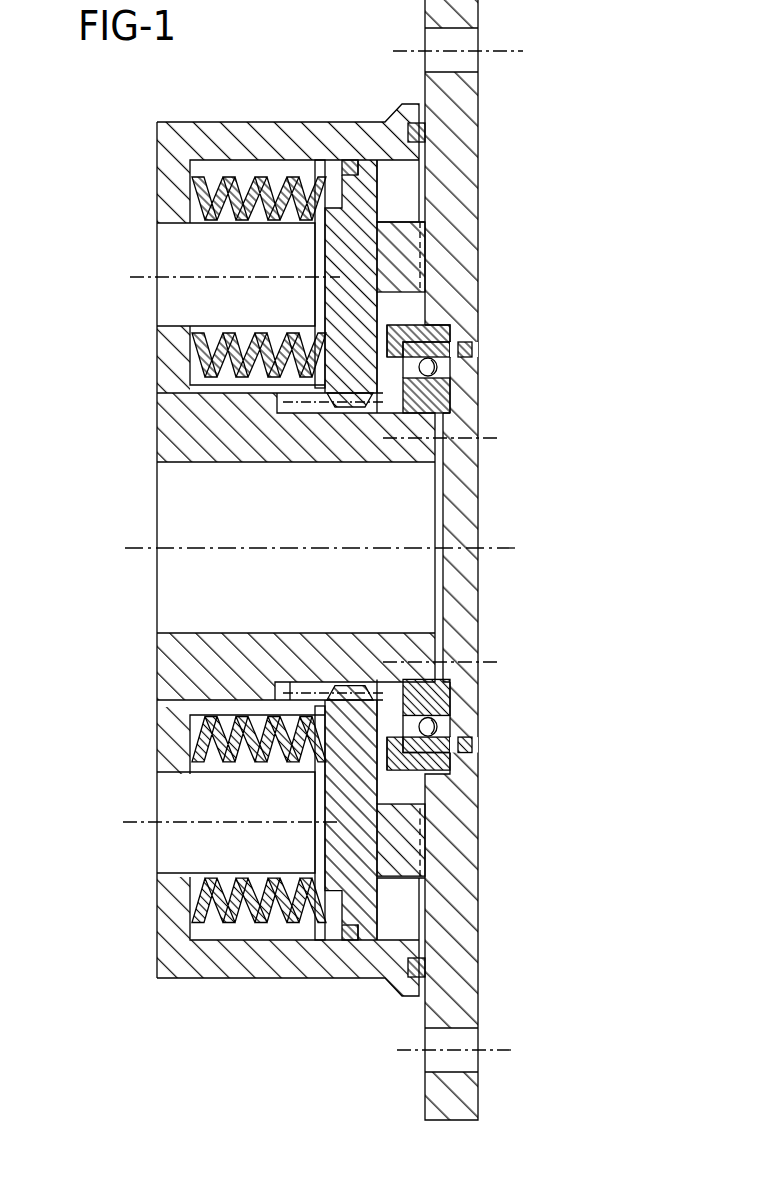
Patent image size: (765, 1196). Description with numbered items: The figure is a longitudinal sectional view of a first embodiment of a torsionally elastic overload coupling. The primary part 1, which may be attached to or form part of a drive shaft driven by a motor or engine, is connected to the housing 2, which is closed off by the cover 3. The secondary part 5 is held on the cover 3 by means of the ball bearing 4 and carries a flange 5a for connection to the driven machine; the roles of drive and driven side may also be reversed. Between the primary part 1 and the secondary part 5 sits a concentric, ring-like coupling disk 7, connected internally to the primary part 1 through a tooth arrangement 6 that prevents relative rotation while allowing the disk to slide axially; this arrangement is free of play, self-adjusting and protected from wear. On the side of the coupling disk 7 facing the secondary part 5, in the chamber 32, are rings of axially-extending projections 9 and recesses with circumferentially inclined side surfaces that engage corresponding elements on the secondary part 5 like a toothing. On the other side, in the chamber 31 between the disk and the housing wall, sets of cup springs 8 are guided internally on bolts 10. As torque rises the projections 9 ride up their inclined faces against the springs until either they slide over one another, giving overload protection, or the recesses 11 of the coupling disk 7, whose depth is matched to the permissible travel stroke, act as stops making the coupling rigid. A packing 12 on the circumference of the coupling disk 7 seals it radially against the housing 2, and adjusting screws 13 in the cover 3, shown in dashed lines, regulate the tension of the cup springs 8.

The primary part 1 is at (190, 430).
The housing 2 is at (166, 186).
The cover 3 is at (460, 540).
The ball bearing 4 is at (440, 388).
The secondary part 5 is at (460, 793).
The flange 5a is at (450, 93).
The tooth arrangement 6 is at (345, 405).
The coupling disk 7 is at (362, 304).
The cup springs 8 is at (218, 185).
The projections 9 is at (405, 247).
The bolts 10 is at (200, 303).
The recesses 11 is at (325, 238).
The packing 12 is at (346, 165).
The adjusting screws 13 is at (487, 441).
The chamber 31 is at (200, 381).
The chamber 32 is at (410, 312).